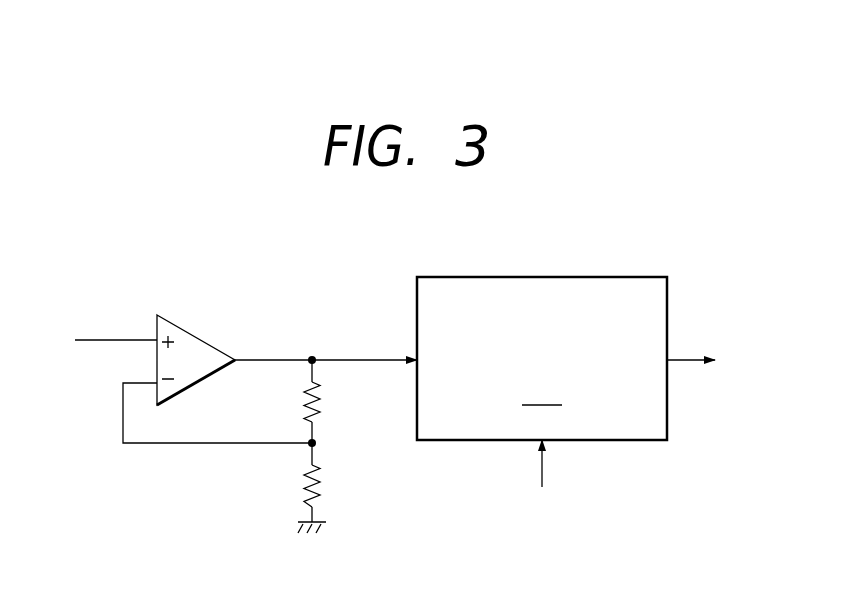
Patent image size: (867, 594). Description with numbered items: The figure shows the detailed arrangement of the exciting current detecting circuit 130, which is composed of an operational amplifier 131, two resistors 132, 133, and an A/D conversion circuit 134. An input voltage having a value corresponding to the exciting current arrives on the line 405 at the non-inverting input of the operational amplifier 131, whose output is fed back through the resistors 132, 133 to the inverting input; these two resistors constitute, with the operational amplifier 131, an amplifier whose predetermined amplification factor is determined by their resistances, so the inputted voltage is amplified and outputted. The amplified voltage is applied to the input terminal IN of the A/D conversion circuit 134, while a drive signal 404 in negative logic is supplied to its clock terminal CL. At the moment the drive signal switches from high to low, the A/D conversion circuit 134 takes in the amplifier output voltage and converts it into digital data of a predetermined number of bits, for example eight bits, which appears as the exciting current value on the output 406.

The exciting current detecting circuit 130 is at (366, 263).
The operational amplifier 131 is at (198, 336).
The resistor 132 is at (321, 394).
The resistor 133 is at (321, 477).
The A/D conversion circuit 134 is at (592, 277).
The clock signal input 404 is at (542, 479).
The input signal 405 is at (94, 339).
The output signal 406 is at (715, 362).